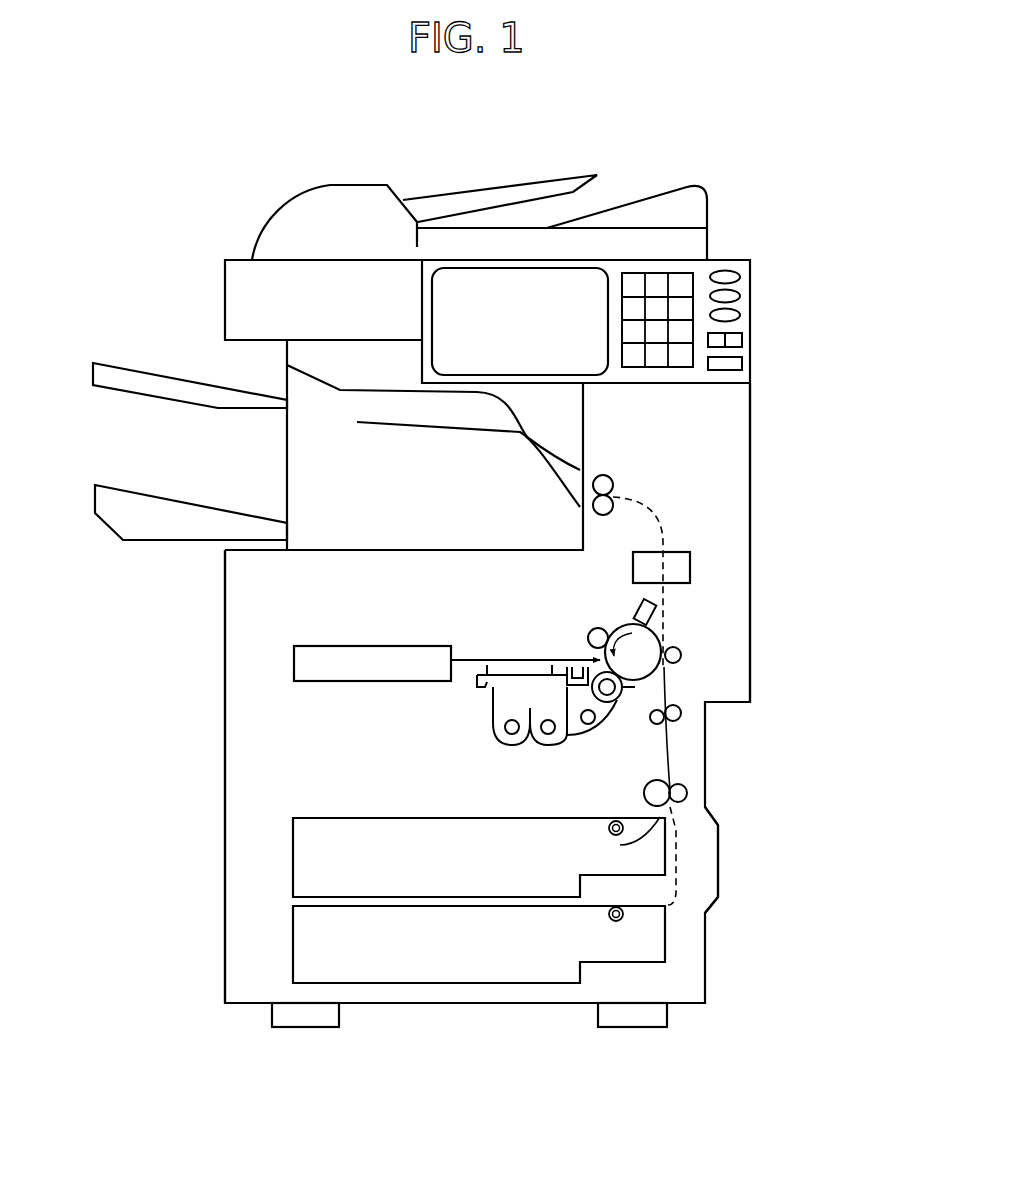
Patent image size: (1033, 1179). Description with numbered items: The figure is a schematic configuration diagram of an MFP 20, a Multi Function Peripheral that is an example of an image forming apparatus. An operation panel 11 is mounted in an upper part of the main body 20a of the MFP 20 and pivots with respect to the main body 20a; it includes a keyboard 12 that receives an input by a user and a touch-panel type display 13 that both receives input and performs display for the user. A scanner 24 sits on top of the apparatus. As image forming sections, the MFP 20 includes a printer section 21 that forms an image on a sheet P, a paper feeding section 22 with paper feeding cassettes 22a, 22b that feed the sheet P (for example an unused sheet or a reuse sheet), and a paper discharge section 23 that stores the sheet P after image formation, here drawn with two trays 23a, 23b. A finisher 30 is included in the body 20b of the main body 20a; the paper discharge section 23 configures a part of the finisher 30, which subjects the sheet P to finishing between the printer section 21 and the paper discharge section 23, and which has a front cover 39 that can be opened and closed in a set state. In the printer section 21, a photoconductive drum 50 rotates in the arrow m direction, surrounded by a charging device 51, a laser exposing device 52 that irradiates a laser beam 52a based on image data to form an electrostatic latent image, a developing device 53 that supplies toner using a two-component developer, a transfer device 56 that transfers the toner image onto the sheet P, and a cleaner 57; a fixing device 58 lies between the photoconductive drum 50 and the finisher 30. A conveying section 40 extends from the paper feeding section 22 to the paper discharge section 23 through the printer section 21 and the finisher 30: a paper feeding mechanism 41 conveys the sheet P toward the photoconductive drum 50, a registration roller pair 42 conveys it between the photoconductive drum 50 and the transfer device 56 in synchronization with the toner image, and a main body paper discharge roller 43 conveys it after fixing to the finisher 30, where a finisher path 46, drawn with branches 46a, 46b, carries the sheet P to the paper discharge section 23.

The operation panel 11 is at (789, 260).
The keyboard 12 is at (626, 299).
The display 13 is at (587, 285).
The MFP 20 is at (518, 207).
The main body 20a is at (752, 467).
The body 20b is at (243, 368).
The printer section 21 is at (276, 610).
The paper feeding section 22 is at (408, 900).
The paper feeding cassette 22a is at (293, 862).
The paper feeding cassette 22b is at (293, 942).
The paper discharge section 23 is at (161, 424).
The upper discharge tray 23a is at (112, 363).
The lower discharge tray 23b is at (127, 490).
The scanner 24 is at (278, 208).
The finisher 30 is at (287, 463).
The front cover 39 is at (366, 518).
The conveying section 40 is at (564, 652).
The paper feeding mechanism 41 is at (693, 807).
The registration roller pair 42 is at (683, 715).
The main body paper discharge roller 43 is at (614, 500).
The finisher path 46 is at (433, 457).
The first conveying path 46a is at (408, 393).
The second conveying path 46b is at (460, 428).
The photoconductive drum 50 is at (647, 667).
The charging device 51 is at (595, 622).
The laser exposing device 52 is at (385, 645).
The laser beam 52a is at (475, 658).
The developing device 53 is at (484, 730).
The transfer device 56 is at (682, 655).
The cleaner 57 is at (657, 613).
The fixing device 58 is at (678, 551).
The sheet P is at (642, 830).